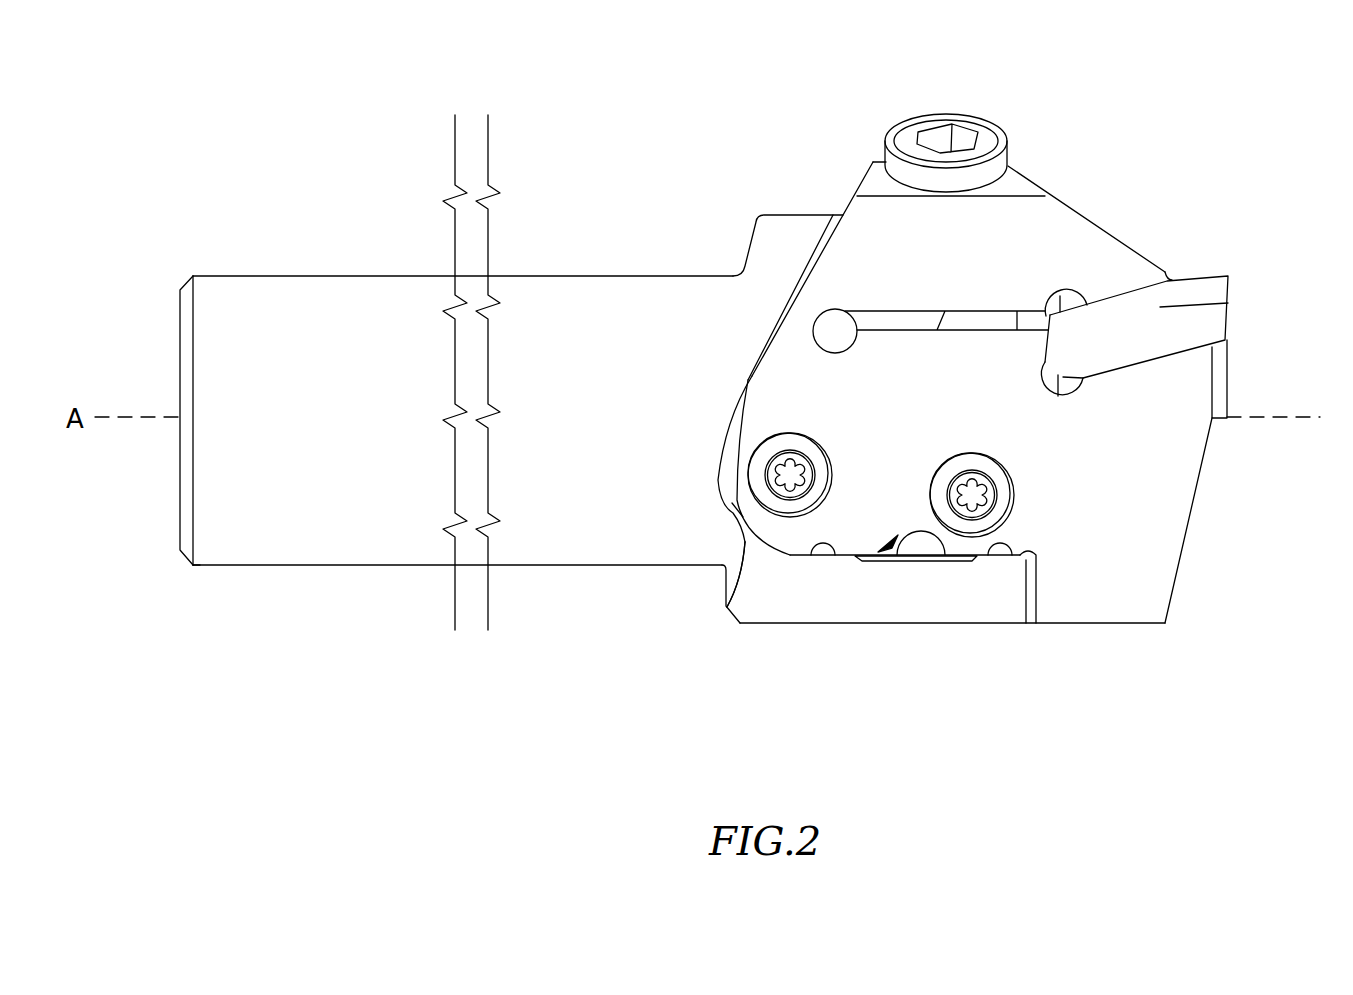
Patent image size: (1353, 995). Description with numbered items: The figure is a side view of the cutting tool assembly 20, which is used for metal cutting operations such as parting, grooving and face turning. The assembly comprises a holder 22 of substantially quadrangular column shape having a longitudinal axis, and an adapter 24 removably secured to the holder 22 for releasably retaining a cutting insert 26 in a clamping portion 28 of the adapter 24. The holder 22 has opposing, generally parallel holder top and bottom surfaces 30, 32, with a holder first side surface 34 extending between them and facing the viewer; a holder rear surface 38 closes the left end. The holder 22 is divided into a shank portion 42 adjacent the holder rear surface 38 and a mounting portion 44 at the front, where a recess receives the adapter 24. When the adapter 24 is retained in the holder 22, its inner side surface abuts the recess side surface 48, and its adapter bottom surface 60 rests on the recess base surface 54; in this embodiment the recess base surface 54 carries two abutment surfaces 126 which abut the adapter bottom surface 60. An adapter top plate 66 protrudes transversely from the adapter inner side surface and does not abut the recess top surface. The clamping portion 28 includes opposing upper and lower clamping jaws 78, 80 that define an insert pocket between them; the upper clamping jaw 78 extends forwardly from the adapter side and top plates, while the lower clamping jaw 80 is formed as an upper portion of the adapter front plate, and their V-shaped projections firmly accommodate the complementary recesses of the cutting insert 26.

The cutting tool assembly 20 is at (262, 142).
The holder 22 is at (652, 306).
The adapter 24 is at (1165, 553).
The cutting insert 26 is at (1236, 292).
The clamping portion 28 is at (1178, 256).
The holder top surface 30 is at (366, 276).
The holder bottom surface 32 is at (347, 567).
The holder first side surface 34 is at (262, 532).
The holder rear surface 38 is at (178, 332).
The shank portion 42 is at (412, 612).
The mounting portion 44 is at (1098, 645).
The recess side surface 48 is at (722, 612).
The recess base surface 54 is at (947, 557).
The adapter bottom surface 60 is at (800, 555).
The adapter top plate 66 is at (866, 176).
The upper clamping jaw 78 is at (1118, 250).
The lower clamping jaw 80 is at (1195, 378).
The abutment surfaces 126 is at (835, 555).